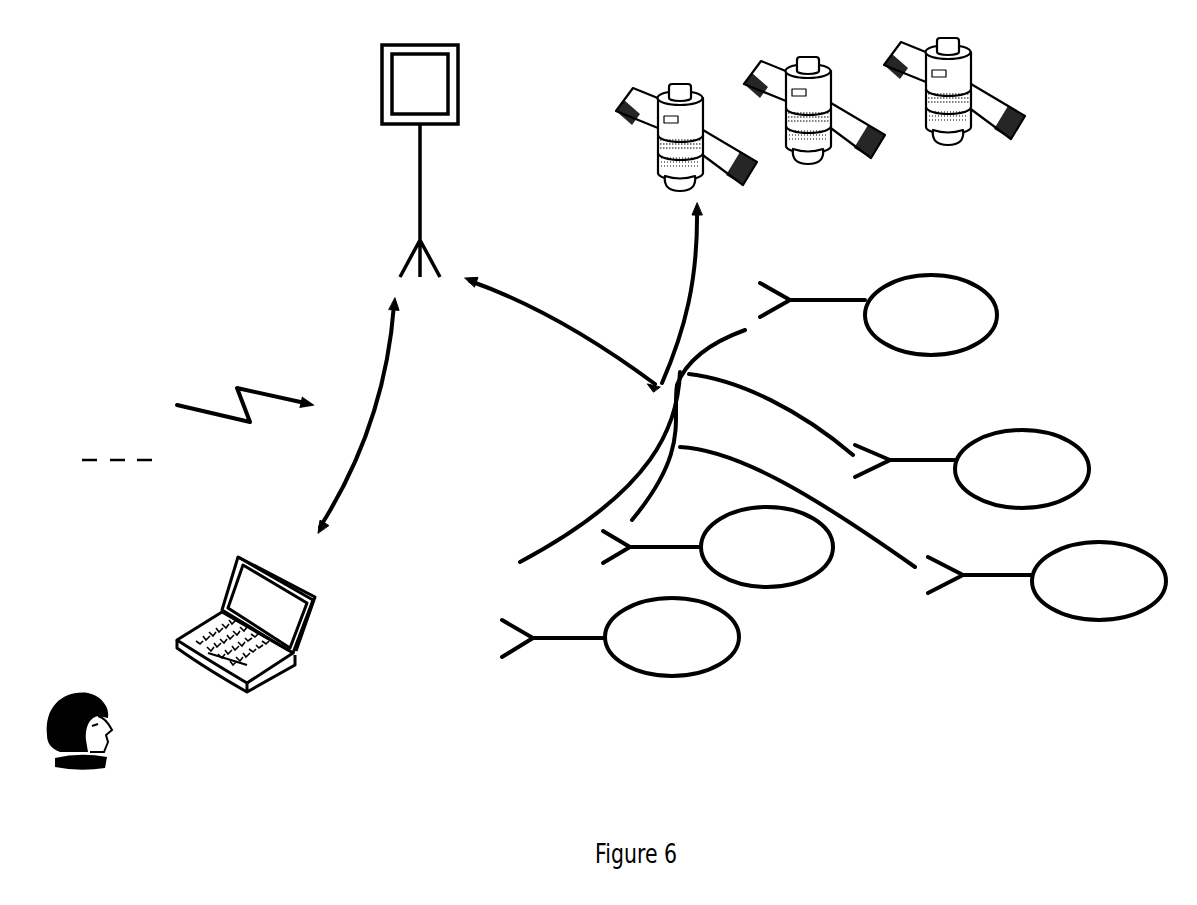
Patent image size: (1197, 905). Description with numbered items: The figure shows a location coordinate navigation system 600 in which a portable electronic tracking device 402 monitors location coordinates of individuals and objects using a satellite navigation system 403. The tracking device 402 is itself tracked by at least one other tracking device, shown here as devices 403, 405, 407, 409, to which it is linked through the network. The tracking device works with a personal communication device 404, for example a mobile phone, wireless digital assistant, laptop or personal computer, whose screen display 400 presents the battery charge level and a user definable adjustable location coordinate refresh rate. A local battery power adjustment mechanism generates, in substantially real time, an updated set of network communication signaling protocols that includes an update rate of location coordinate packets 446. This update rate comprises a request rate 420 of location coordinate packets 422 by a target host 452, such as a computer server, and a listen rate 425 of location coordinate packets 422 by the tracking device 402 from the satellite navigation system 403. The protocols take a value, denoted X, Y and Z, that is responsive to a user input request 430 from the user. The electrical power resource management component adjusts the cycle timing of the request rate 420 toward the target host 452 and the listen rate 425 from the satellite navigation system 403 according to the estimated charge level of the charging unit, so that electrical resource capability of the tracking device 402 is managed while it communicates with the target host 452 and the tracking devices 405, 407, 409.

The location coordinate navigation system 600 is at (118, 245).
The target host 452 is at (388, 88).
The update rate of location coordinate packets 446 is at (245, 386).
The request rate 420 is at (91, 463).
The location coordinate packets 422 is at (119, 463).
The listen rate 425 is at (147, 468).
The screen display 400 is at (287, 618).
The personal communication device 404 is at (303, 697).
The user input request 430 is at (115, 733).
The portable electronic tracking device 402 is at (710, 633).
The satellite navigation system 403 is at (747, 183).
The tracking device 405 is at (1120, 588).
The tracking device 407 is at (1035, 460).
The tracking device 409 is at (937, 303).